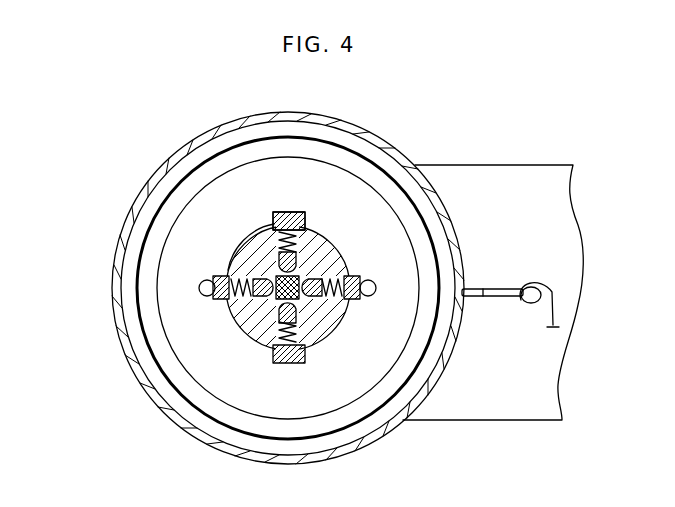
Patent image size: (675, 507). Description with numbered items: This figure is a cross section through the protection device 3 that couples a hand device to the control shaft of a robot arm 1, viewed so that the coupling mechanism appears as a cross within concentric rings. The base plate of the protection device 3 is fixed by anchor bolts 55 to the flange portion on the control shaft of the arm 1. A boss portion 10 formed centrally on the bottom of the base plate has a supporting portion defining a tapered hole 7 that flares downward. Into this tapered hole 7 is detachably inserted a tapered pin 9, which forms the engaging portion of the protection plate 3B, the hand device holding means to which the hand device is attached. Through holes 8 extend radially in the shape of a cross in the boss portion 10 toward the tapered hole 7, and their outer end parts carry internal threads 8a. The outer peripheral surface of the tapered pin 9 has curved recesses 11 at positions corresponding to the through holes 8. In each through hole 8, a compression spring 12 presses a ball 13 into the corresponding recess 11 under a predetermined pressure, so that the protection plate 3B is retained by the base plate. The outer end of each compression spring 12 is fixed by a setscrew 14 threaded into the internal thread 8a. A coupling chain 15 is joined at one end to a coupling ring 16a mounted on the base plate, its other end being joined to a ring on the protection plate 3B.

The arm 1 is at (483, 176).
The protection device 3 is at (170, 162).
The protection plate 3B is at (118, 249).
The tapered hole 7 is at (270, 272).
The through holes 8 is at (306, 226).
The internal threads 8a is at (274, 224).
The tapered pin 9 is at (300, 300).
The boss portion 10 is at (318, 256).
The curved recesses 11 is at (306, 240).
The compression springs 12 is at (232, 272).
The balls 13 is at (313, 300).
The setscrew 14 is at (355, 282).
The coupling chain 15 is at (545, 290).
The coupling ring 16a is at (503, 305).
The anchor bolts 55 is at (207, 294).